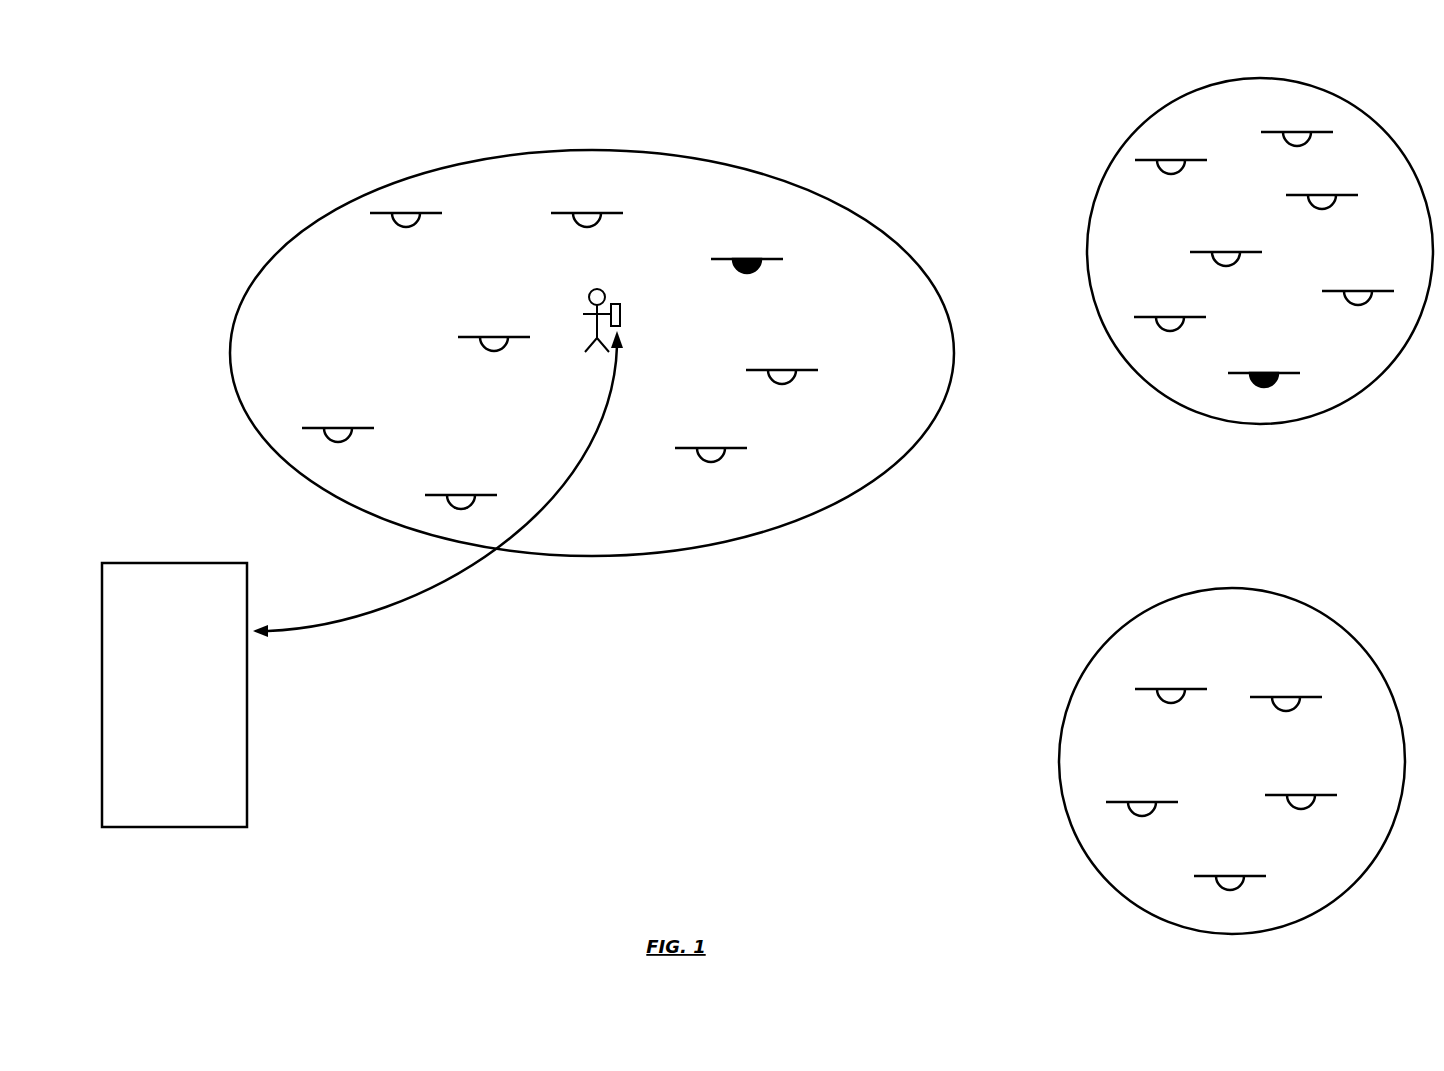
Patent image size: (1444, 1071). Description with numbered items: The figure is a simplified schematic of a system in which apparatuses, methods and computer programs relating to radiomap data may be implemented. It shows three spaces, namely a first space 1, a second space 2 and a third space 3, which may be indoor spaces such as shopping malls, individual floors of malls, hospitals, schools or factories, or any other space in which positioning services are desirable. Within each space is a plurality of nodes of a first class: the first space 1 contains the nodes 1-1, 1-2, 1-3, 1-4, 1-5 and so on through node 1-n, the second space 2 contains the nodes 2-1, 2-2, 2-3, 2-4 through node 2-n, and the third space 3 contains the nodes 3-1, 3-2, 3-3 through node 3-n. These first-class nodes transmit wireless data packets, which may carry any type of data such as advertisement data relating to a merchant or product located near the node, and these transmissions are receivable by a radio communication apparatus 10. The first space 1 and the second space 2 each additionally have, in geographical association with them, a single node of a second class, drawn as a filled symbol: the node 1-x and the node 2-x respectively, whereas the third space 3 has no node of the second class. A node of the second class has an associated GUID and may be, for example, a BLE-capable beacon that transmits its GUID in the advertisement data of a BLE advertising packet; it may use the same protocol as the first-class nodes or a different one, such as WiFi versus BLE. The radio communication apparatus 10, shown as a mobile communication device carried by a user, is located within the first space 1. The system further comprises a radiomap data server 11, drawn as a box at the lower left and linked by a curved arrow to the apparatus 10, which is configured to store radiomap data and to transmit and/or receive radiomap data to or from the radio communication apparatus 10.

The first space 1 is at (337, 200).
The node of the first class 1-1 is at (590, 213).
The node of the first class 1-2 is at (785, 370).
The node of the first class 1-3 is at (714, 448).
The node of the first class 1-4 is at (497, 337).
The node of the first class 1-5 is at (409, 213).
The node of the second class 1-x is at (750, 259).
The node of the first class 1-n is at (464, 495).
The radio communication apparatus 10 is at (621, 311).
The radiomap data server 11 is at (207, 827).
The second space 2 is at (1150, 117).
The node of the first class 2-1 is at (1174, 160).
The node of the first class 2-2 is at (1300, 132).
The node of the first class 2-3 is at (1229, 252).
The node of the first class 2-4 is at (1325, 195).
The node of the first class 2-n is at (1361, 291).
The node of the second class 2-x is at (1267, 373).
The third space 3 is at (1323, 908).
The node of the first class 3-1 is at (1174, 689).
The node of the first class 3-2 is at (1289, 697).
The node of the first class 3-3 is at (1145, 802).
The node of the first class 3-n is at (1233, 876).